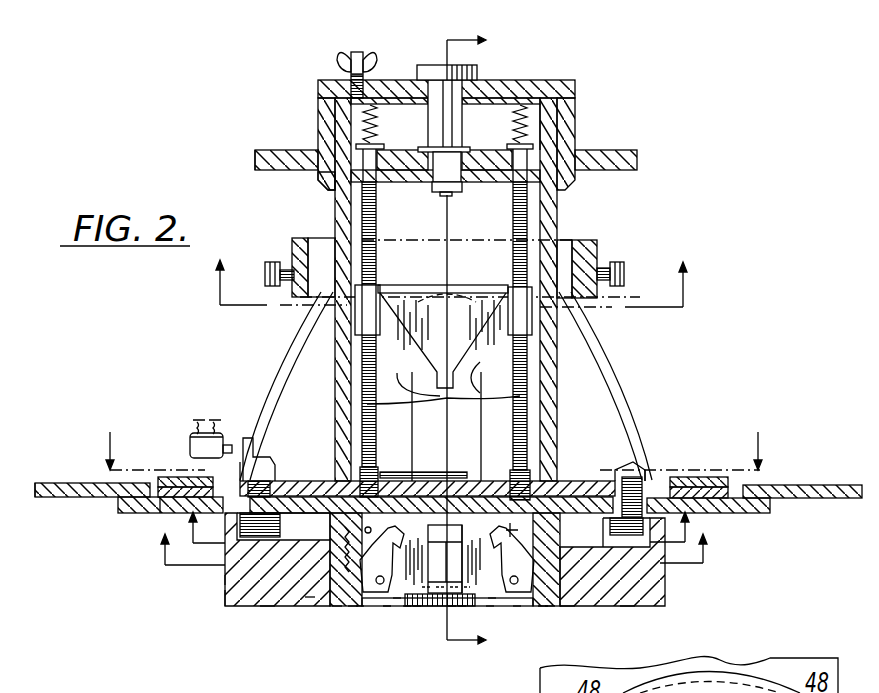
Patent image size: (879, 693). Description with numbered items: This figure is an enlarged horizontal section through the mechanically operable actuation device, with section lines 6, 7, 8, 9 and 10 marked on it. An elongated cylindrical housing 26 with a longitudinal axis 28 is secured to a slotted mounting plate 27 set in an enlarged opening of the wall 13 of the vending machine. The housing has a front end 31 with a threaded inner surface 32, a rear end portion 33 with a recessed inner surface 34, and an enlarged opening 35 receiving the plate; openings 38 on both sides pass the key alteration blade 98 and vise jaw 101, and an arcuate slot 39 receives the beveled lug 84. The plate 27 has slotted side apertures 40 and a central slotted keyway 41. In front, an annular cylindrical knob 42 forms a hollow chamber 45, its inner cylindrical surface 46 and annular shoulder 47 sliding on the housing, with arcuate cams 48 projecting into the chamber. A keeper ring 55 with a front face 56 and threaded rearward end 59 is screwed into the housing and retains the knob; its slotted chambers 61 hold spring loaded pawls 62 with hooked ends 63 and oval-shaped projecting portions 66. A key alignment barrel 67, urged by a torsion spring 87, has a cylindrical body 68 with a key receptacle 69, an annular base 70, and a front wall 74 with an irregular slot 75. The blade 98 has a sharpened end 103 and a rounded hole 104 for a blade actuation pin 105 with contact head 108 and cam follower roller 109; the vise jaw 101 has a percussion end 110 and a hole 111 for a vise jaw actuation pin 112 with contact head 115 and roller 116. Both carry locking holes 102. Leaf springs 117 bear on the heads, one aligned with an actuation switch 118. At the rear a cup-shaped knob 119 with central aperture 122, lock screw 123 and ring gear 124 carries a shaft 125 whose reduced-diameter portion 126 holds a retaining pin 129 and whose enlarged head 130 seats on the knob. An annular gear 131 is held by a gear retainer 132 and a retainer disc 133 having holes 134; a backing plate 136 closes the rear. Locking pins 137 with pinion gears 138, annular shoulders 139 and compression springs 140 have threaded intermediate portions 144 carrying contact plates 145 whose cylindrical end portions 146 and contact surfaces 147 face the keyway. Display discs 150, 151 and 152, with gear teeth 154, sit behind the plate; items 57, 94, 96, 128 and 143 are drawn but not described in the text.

The section line 6- 6 is at (435, 446).
The section line 7- 7 is at (438, 525).
The section line 8- 8 is at (429, 554).
The section line 9- 9 is at (453, 340).
The section line 10- 10 is at (453, 286).
The wall 13 is at (818, 490).
The housing 26 is at (335, 352).
The mounting plate 27 is at (763, 514).
The longitudinal axis 28 is at (463, 245).
The front end 31 is at (568, 606).
The threaded inner surface 32 is at (353, 608).
The rear end portion 33 is at (556, 108).
The recessed inner surface 34 is at (535, 148).
The enlarged opening 35 is at (472, 367).
The openings 38 is at (327, 479).
The arcuate slot 39 is at (332, 522).
The slotted side apertures 40 is at (287, 480).
The central slotted keyway 41 is at (450, 490).
The annular cylindrical knob 42 is at (235, 593).
The hollow chamber 45 is at (225, 578).
The inner cylindrical surface 46 is at (602, 545).
The annular shoulder 47 is at (550, 608).
The arcuate cams 48 is at (627, 606).
The keeper ring 55 is at (360, 608).
The front face 56 is at (336, 606).
The rack plate 57 is at (447, 600).
The threaded rearward end 59 is at (328, 606).
The slotted chambers 61 is at (373, 608).
The spring loaded pawl 62 is at (387, 608).
The hooked end 63 is at (432, 500).
The oval-shaped projecting portion 66 is at (492, 598).
The key alignment barrel 67 is at (460, 612).
The cylindrical body 68 is at (397, 598).
The key receptacle 69 is at (407, 608).
The annular base 70 is at (557, 480).
The front wall 74 is at (417, 608).
The slot 75 is at (452, 612).
The beveled lug 84 is at (310, 597).
The torsion spring 87 is at (497, 495).
The pin 94 is at (490, 606).
The pin 96 is at (517, 608).
The key alteration blade 98 is at (290, 455).
The vise jaw 101 is at (623, 430).
The locking holes 102 is at (337, 417).
The sharpened end 103 is at (423, 483).
The rounded hole 104 is at (245, 437).
The blade actuation pin 105 is at (228, 472).
The contact head 108 is at (257, 423).
The cam follower roller 109 is at (267, 606).
The percussion end 110 is at (495, 467).
The hole 111 is at (648, 460).
The vise jaw actuation pin 112 is at (645, 478).
The contact head 115 is at (652, 432).
The roller 116 is at (665, 578).
The leaf springs 117 is at (280, 387).
The actuation switch 118 is at (190, 437).
The cup-shaped knob 119 is at (581, 76).
The central aperture 122 is at (432, 68).
The lock screw 123 is at (346, 52).
The ring gear 124 is at (266, 152).
The shaft 125 is at (470, 122).
The reduced-diameter portion 126 is at (376, 200).
The threaded rod 128 is at (520, 309).
The retaining pin 129 is at (462, 188).
The enlarged head 130 is at (420, 70).
The annular gear 131 is at (398, 160).
The gear retainer 132 is at (468, 150).
The retainer disc 133 is at (358, 195).
The holes 134 is at (345, 187).
The backing plate 136 is at (492, 99).
The locking pins 137 is at (505, 268).
The pinion gears 138 is at (532, 152).
The annular shoulders 139 is at (535, 138).
The compression springs 140 is at (540, 120).
The tube wall 143 is at (382, 476).
The intermediate portions 144 is at (372, 403).
The contact plate 145 is at (463, 325).
The cylindrical end portions 146 is at (355, 318).
The contact surface 147 is at (408, 372).
The display disc 150 is at (155, 477).
The display disc 151 is at (146, 482).
The display disc 152 is at (173, 501).
The gear teeth 154 is at (682, 472).